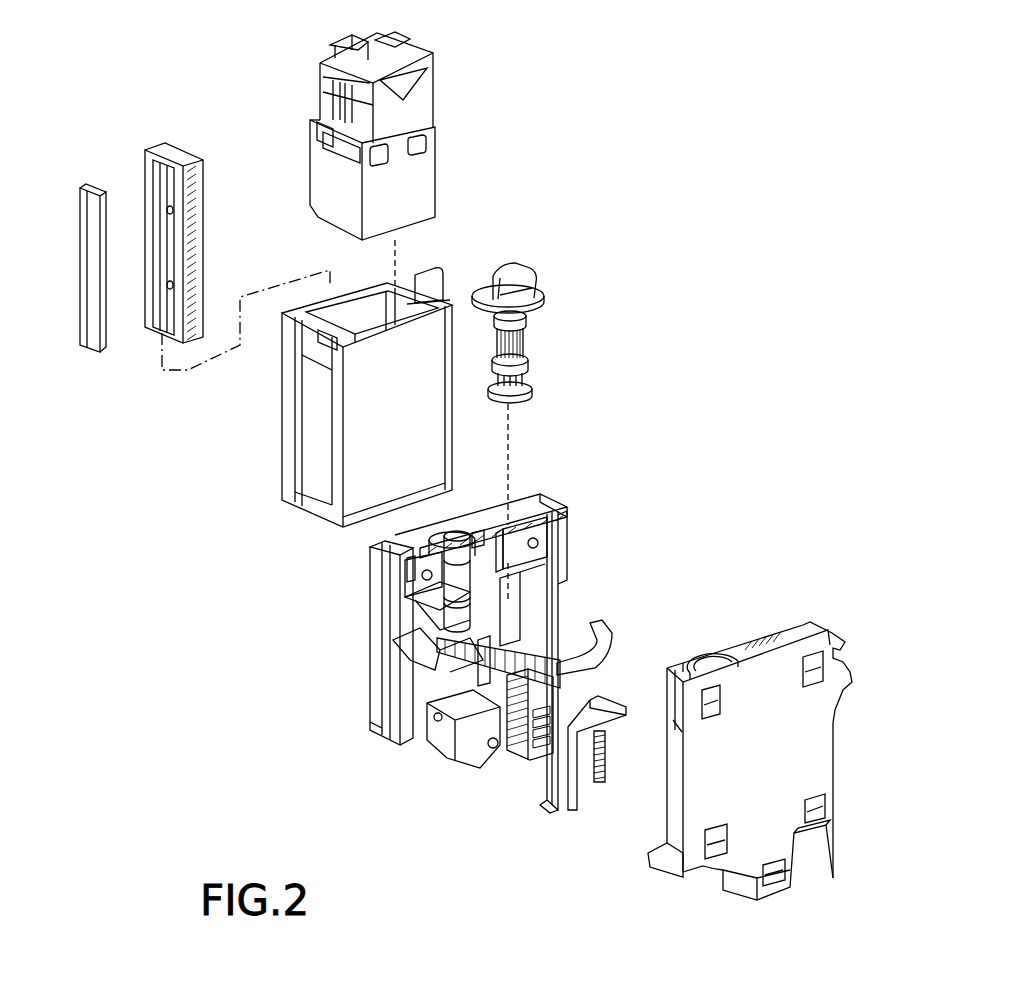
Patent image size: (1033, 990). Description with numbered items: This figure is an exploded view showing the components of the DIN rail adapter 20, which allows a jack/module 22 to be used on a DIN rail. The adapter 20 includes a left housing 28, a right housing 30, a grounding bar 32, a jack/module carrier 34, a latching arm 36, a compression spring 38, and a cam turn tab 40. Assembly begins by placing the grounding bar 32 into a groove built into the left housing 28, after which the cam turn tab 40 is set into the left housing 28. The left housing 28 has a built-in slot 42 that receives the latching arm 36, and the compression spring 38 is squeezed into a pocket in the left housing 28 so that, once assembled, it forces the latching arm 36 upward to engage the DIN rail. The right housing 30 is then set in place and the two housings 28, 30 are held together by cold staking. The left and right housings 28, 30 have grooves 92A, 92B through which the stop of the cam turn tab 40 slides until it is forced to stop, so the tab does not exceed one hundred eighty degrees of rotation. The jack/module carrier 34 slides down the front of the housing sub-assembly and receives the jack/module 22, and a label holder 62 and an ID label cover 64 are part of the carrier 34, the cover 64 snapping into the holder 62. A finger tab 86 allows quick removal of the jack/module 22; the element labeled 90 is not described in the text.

The DIN rail adapter 20 is at (728, 118).
The jack/module 22 is at (437, 172).
The left housing 28 is at (377, 672).
The right housing 30 is at (740, 882).
The grounding bar 32 is at (600, 620).
The jack/module carrier 34 is at (282, 471).
The latching arm 36 is at (557, 790).
The compression spring 38 is at (599, 782).
The cam turn tab 40 is at (523, 338).
The slot 42 is at (518, 757).
The label holder 62 is at (143, 176).
The ID label cover 64 is at (81, 327).
The finger tab 86 is at (524, 282).
The mount 90 is at (477, 533).
The groove 92A is at (437, 520).
The groove 92B is at (733, 660).